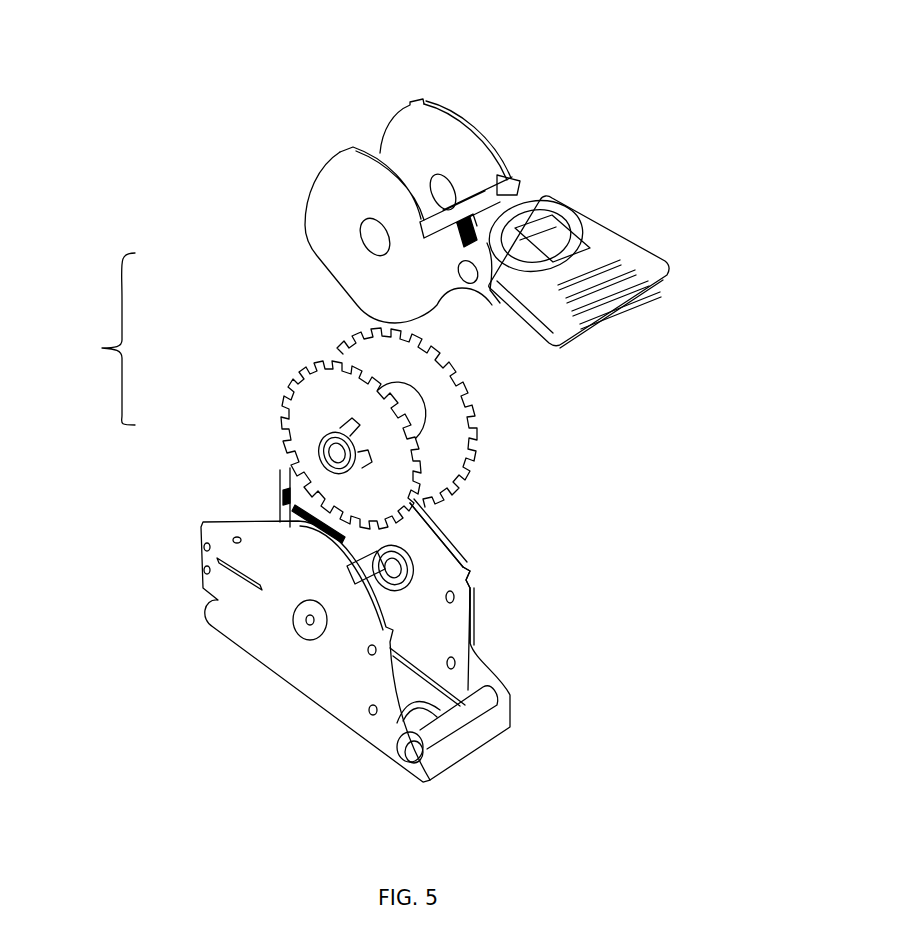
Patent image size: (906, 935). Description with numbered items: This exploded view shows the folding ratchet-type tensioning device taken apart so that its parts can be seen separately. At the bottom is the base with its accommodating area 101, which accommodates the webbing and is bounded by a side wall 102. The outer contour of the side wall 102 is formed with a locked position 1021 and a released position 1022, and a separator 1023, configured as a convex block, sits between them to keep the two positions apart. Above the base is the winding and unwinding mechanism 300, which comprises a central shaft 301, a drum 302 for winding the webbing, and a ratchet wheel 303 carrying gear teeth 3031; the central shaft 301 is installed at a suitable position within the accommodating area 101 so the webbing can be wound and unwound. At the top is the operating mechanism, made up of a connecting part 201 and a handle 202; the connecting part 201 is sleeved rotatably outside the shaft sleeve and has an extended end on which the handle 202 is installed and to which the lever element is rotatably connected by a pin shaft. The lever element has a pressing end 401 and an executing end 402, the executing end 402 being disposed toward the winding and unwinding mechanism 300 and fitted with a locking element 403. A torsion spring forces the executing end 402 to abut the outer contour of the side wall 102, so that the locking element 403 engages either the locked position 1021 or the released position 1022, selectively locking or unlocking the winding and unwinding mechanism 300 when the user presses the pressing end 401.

The accommodating area 101 is at (420, 643).
The side wall 102 is at (360, 658).
The locked position 1021 is at (455, 553).
The released position 1022 is at (475, 600).
The separator 1023 is at (468, 575).
The connecting part 201 is at (333, 200).
The handle 202 is at (607, 245).
The winding and unwinding mechanism 300 is at (86, 339).
The central shaft 301 is at (347, 566).
The drum 302 is at (343, 360).
The ratchet wheel 303 is at (313, 410).
The gear teeth 3031 is at (478, 432).
The pressing end 401 is at (553, 207).
The executing end 402 is at (480, 207).
The locking element 403 is at (500, 175).